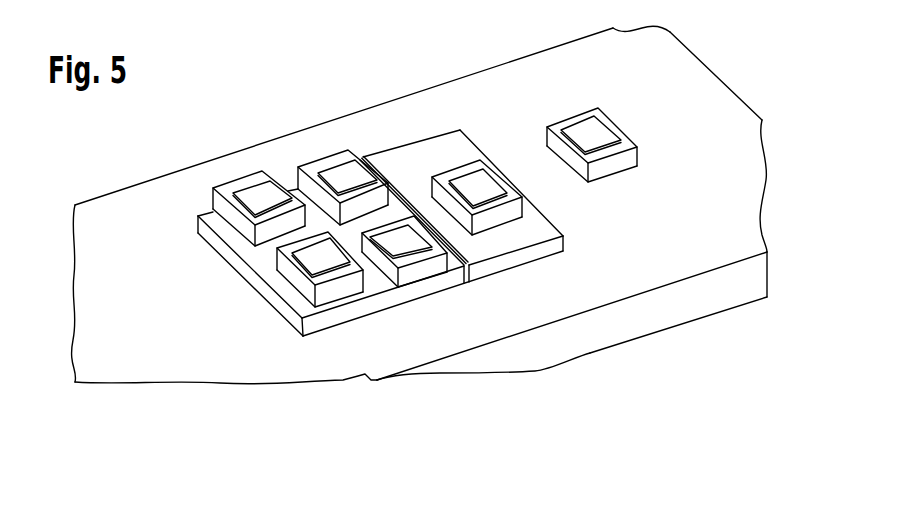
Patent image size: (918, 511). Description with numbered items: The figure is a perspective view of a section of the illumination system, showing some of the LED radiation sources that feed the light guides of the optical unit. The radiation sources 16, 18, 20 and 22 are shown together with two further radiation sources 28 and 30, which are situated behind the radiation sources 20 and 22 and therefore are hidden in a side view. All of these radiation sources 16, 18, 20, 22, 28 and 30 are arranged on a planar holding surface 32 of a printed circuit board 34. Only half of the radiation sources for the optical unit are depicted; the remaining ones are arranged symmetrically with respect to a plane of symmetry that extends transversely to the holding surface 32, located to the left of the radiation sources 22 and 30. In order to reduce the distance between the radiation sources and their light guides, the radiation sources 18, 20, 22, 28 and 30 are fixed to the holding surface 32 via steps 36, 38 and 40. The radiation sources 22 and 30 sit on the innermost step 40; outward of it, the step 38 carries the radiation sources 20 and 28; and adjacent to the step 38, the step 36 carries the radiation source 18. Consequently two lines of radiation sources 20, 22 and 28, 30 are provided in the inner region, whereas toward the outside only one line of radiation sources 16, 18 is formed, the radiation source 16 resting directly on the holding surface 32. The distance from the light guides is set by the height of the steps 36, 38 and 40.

The radiation source 16 is at (615, 148).
The radiation source 18 is at (463, 173).
The radiation source 20 is at (335, 158).
The radiation source 22 is at (248, 183).
The radiation source 28 is at (413, 253).
The radiation source 30 is at (333, 276).
The holding surface 32 is at (143, 214).
The printed circuit board 34 is at (740, 282).
The step 36 is at (523, 233).
The step 38 is at (460, 268).
The step 40 is at (268, 257).